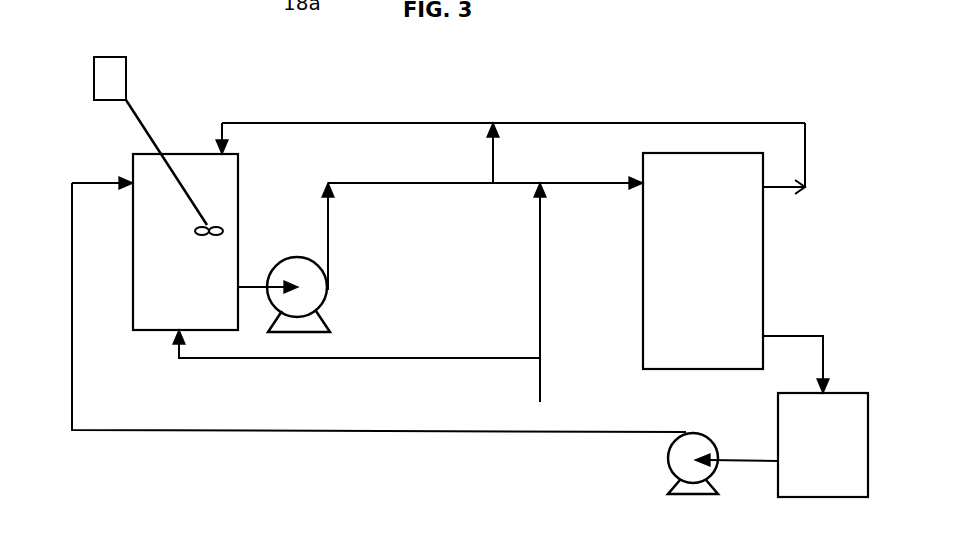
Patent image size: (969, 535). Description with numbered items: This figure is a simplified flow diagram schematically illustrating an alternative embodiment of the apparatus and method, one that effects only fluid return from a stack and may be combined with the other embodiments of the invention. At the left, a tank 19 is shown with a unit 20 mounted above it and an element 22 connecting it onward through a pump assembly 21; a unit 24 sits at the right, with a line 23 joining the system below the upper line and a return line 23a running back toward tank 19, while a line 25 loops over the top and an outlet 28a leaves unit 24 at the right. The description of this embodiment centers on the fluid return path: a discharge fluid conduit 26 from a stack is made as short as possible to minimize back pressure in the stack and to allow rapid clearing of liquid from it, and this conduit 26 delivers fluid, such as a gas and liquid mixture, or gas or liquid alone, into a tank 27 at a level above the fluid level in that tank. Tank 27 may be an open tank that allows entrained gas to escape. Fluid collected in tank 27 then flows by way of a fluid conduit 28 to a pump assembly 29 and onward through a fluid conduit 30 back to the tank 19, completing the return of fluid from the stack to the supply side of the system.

The tank 19 is at (150, 258).
The agitator motor 20 is at (127, 107).
The pump 21 is at (312, 302).
The feed line 22 is at (437, 186).
The inlet line 23 is at (538, 240).
The return line 23a is at (372, 360).
The treatment unit 24 is at (652, 343).
The recycle line 25 is at (512, 133).
The discharge fluid conduit 26 is at (823, 354).
The tank 27 is at (848, 462).
The fluid conduit 28 is at (733, 462).
The outlet line 28a is at (808, 160).
The pump assembly 29 is at (687, 458).
The fluid conduit 30 is at (378, 432).